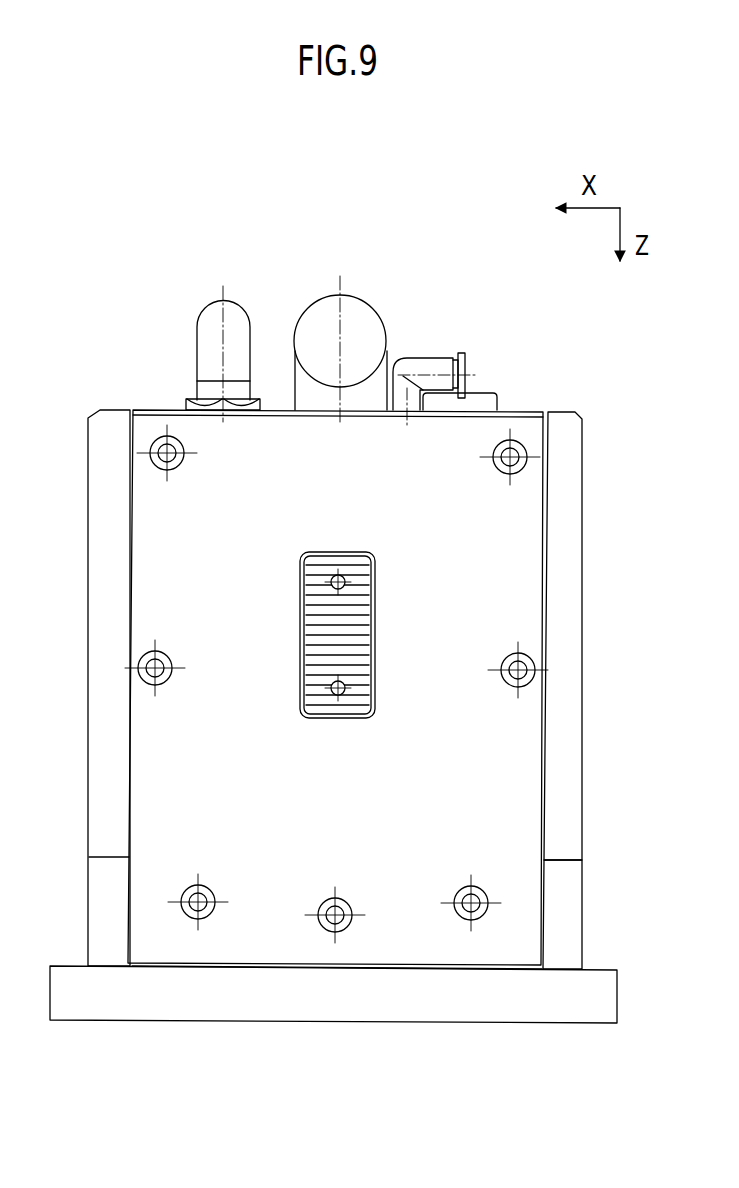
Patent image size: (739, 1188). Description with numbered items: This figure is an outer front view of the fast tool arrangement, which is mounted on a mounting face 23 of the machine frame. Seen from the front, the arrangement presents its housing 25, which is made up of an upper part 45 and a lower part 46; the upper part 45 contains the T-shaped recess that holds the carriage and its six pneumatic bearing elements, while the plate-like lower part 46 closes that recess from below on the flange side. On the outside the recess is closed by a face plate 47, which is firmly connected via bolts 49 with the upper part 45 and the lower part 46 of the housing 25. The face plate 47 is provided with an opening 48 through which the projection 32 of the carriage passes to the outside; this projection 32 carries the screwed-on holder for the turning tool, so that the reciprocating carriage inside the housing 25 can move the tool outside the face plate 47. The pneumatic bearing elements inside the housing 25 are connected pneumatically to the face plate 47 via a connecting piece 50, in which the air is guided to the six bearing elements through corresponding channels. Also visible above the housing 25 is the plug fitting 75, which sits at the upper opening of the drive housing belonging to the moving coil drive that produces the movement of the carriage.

The mounting face 23 is at (593, 968).
The housing 25 is at (563, 405).
The projection 32 is at (348, 625).
The upper part 45 is at (565, 537).
The lower part 46 is at (565, 890).
The face plate 47 is at (381, 496).
The opening 48 is at (368, 556).
The bolts 49 is at (176, 462).
The connecting piece 50 is at (440, 365).
The plug fitting 75 is at (367, 302).